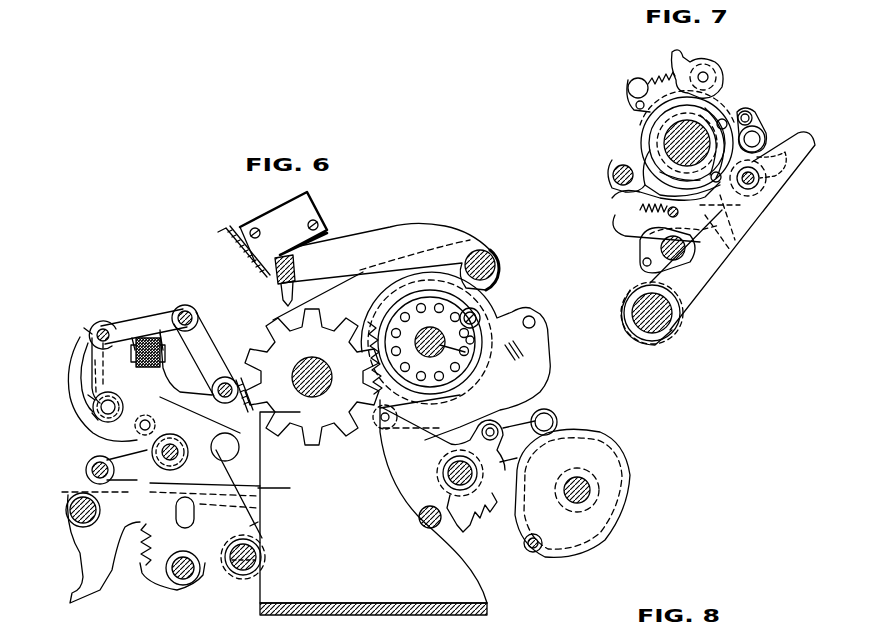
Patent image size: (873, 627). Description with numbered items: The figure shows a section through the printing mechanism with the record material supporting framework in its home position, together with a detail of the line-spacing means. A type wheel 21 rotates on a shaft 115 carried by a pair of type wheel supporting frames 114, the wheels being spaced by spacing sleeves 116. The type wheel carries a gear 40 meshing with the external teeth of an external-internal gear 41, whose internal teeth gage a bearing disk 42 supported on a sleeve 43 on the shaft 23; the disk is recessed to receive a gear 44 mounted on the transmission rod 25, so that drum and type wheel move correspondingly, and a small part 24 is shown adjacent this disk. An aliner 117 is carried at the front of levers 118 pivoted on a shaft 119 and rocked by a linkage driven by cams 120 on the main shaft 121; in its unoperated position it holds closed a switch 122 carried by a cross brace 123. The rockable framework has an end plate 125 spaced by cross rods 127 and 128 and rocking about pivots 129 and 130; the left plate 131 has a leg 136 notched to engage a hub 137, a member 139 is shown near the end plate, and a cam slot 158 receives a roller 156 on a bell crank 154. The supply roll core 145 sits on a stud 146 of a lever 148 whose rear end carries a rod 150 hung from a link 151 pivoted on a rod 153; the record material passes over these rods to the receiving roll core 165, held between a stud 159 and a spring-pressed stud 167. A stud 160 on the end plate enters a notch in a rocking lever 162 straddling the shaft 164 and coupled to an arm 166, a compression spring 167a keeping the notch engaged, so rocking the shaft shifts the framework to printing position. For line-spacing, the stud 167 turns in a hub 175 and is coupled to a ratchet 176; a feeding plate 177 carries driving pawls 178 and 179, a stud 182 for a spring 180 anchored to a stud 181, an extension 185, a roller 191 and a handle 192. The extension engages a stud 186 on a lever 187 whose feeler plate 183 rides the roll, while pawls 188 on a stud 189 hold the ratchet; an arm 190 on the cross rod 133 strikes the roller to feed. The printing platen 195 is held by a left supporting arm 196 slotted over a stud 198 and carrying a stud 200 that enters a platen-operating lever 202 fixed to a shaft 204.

In FIG. 6, the type wheel 21 is at (275, 322).
In FIG. 6, the shaft 23 is at (444, 346).
In FIG. 6, the pin 24 is at (474, 340).
In FIG. 6, the transmission rod 25 is at (500, 302).
In FIG. 6, the gear 40 is at (364, 428).
In FIG. 6, the external-internal gear 41 is at (368, 323).
In FIG. 6, the bearing disk 42 is at (398, 312).
In FIG. 6, the sleeve 43 is at (466, 352).
In FIG. 6, the gear 44 is at (480, 307).
In FIG. 6, the type wheel supporting frames 114 is at (478, 593).
In FIG. 6, the shaft 115 is at (312, 393).
In FIG. 6, the spacing sleeves 116 is at (312, 368).
In FIG. 6, the aliner 117 is at (278, 283).
In FIG. 6, the levers 118 is at (416, 228).
In FIG. 6, the shaft 119 is at (489, 250).
In FIG. 6, the cams 120 is at (609, 447).
In FIG. 6, the main shaft 121 is at (583, 487).
In FIG. 6, the switch 122 is at (312, 204).
In FIG. 6, the cross brace 123 is at (228, 226).
In FIG. 6, the left end plate 125 is at (100, 355).
In FIG. 6, the cross rod 127 is at (92, 466).
In FIG. 7, the cross rod 127 is at (668, 244).
In FIG. 6, the cross rod 128 is at (102, 327).
In FIG. 6, the pivot 129 is at (140, 428).
In FIG. 7, the pivot 130 is at (760, 188).
In FIG. 6, the left plate 131 is at (72, 588).
In FIG. 6, the cross rod 133 is at (78, 520).
In FIG. 7, the cross rod 133 is at (662, 318).
In FIG. 6, the legs 136 is at (244, 514).
In FIG. 6, the hub 137 is at (238, 568).
In FIG. 6, the tab 139 is at (86, 330).
In FIG. 6, the core of the supply roll 145 is at (232, 458).
In FIG. 6, the stud 146 is at (219, 482).
In FIG. 6, the lever 148 is at (242, 402).
In FIG. 6, the rod 150 is at (212, 388).
In FIG. 6, the link 151 is at (206, 335).
In FIG. 6, the rod 153 is at (183, 306).
In FIG. 6, the bell crank 154 is at (146, 337).
In FIG. 6, the roller 156 is at (88, 395).
In FIG. 6, the cam slot 158 is at (95, 368).
In FIG. 6, the stud 159 is at (94, 407).
In FIG. 6, the stud 160 is at (291, 489).
In FIG. 6, the rocking lever 162 is at (219, 499).
In FIG. 6, the shaft 164 is at (182, 582).
In FIG. 6, the core of the receiving roll 165 is at (92, 413).
In FIG. 6, the arms 166 is at (200, 516).
In FIG. 7, the spring-pressed stud 167 is at (700, 128).
In FIG. 6, the compression spring 167a is at (144, 573).
In FIG. 7, the hub 175 is at (648, 120).
In FIG. 7, the ratchet 176 is at (655, 130).
In FIG. 7, the feeding plate 177 is at (710, 112).
In FIG. 7, the driving pawl 178 is at (696, 60).
In FIG. 7, the driving pawl 179 is at (778, 174).
In FIG. 7, the spring 180 is at (650, 140).
In FIG. 7, the stud 181 is at (660, 168).
In FIG. 7, the stud 182 is at (728, 121).
In FIG. 7, the feeler plate 183 is at (728, 244).
In FIG. 7, the extension 185 is at (740, 213).
In FIG. 7, the stud 186 is at (735, 178).
In FIG. 7, the lever 187 is at (645, 260).
In FIG. 7, the pawls 188 is at (612, 172).
In FIG. 7, the stud 189 is at (625, 182).
In FIG. 7, the arm 190 is at (797, 152).
In FIG. 7, the roller 191 is at (762, 134).
In FIG. 7, the handle 192 is at (634, 80).
In FIG. 6, the printing platen 195 is at (134, 340).
In FIG. 6, the left supporting arm 196 is at (161, 333).
In FIG. 6, the stud 198 is at (82, 482).
In FIG. 6, the stud 200 is at (205, 323).
In FIG. 6, the platen-operating lever 202 is at (252, 530).
In FIG. 6, the shaft 204 is at (240, 575).